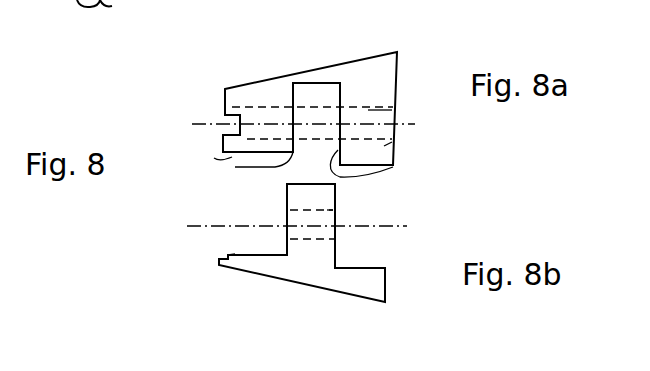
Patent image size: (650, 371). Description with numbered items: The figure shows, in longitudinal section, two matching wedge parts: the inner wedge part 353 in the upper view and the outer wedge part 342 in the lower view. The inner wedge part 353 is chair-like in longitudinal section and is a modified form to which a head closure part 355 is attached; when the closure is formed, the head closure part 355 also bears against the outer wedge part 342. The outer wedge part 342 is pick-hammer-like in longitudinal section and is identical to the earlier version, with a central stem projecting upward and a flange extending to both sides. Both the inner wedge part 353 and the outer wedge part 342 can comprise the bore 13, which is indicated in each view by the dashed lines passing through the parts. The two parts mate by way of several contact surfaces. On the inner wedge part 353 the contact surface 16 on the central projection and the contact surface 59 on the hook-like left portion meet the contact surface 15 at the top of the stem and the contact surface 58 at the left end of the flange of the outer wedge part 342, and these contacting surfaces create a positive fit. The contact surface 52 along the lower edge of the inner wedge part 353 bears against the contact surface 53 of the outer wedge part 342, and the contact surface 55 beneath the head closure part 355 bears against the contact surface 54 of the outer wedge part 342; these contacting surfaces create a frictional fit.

In FIG. 8A, the inner wedge part 353 is at (289, 79).
In FIG. 8A, the contact surface 59 is at (214, 158).
In FIG. 8A, the contact surface 52 is at (235, 167).
In FIG. 8A, the contact surface 16 is at (320, 84).
In FIG. 8A, the bore 13 is at (368, 110).
In FIG. 8B, the bore 13 is at (327, 210).
In FIG. 8A, the head closure part 355 is at (384, 146).
In FIG. 8A, the contact surface 55 is at (394, 166).
In FIG. 8B, the outer wedge part 342 is at (313, 276).
In FIG. 8B, the contact surface 15 is at (310, 184).
In FIG. 8B, the contact surface 54 is at (337, 252).
In FIG. 8B, the contact surface 53 is at (235, 254).
In FIG. 8B, the contact surface 58 is at (219, 258).